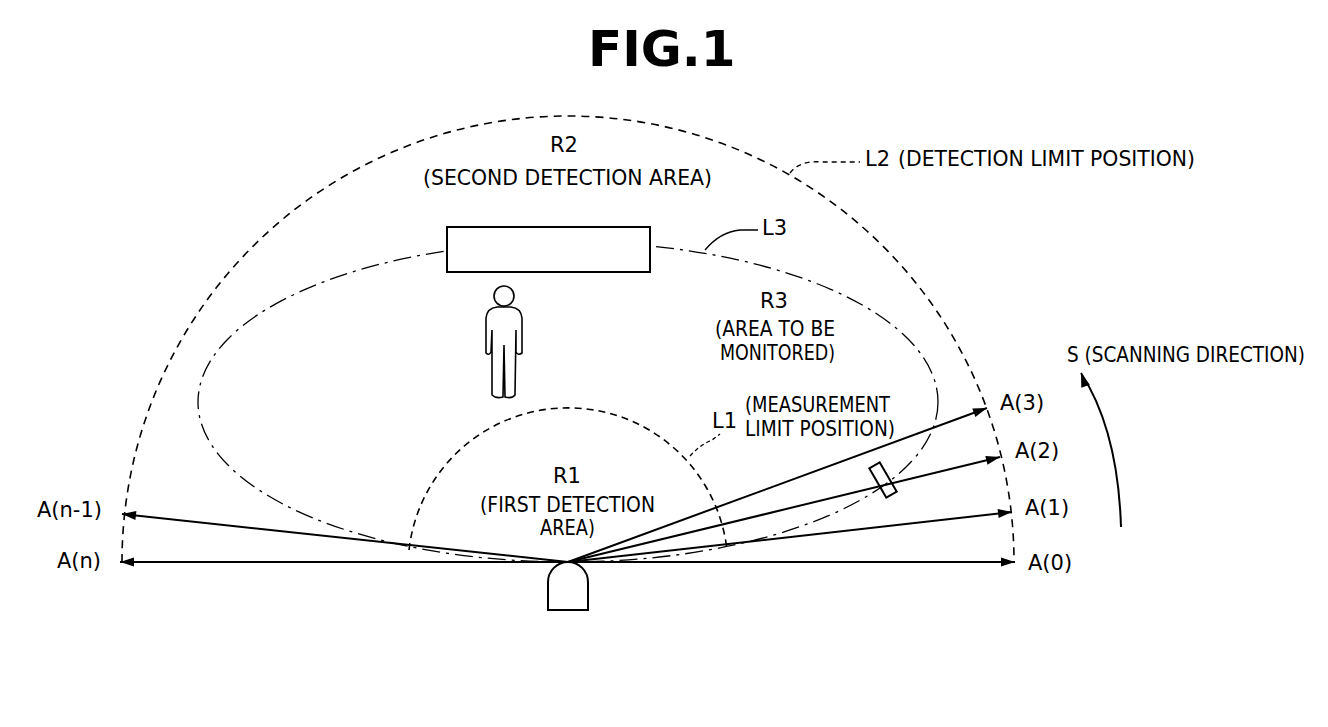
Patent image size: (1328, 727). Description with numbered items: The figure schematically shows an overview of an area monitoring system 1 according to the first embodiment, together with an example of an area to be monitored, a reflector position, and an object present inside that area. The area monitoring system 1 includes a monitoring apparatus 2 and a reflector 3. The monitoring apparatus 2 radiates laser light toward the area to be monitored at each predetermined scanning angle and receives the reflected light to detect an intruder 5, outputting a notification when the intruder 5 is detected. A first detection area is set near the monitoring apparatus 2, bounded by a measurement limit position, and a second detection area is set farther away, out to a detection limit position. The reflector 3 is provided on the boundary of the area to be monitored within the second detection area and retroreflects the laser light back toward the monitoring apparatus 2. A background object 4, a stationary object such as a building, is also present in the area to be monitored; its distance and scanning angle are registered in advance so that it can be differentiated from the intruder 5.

The area monitoring system 1 is at (448, 624).
The monitoring apparatus 2 is at (590, 595).
The reflector 3 is at (872, 479).
The background object 4 is at (612, 272).
The intruder 5 is at (522, 332).